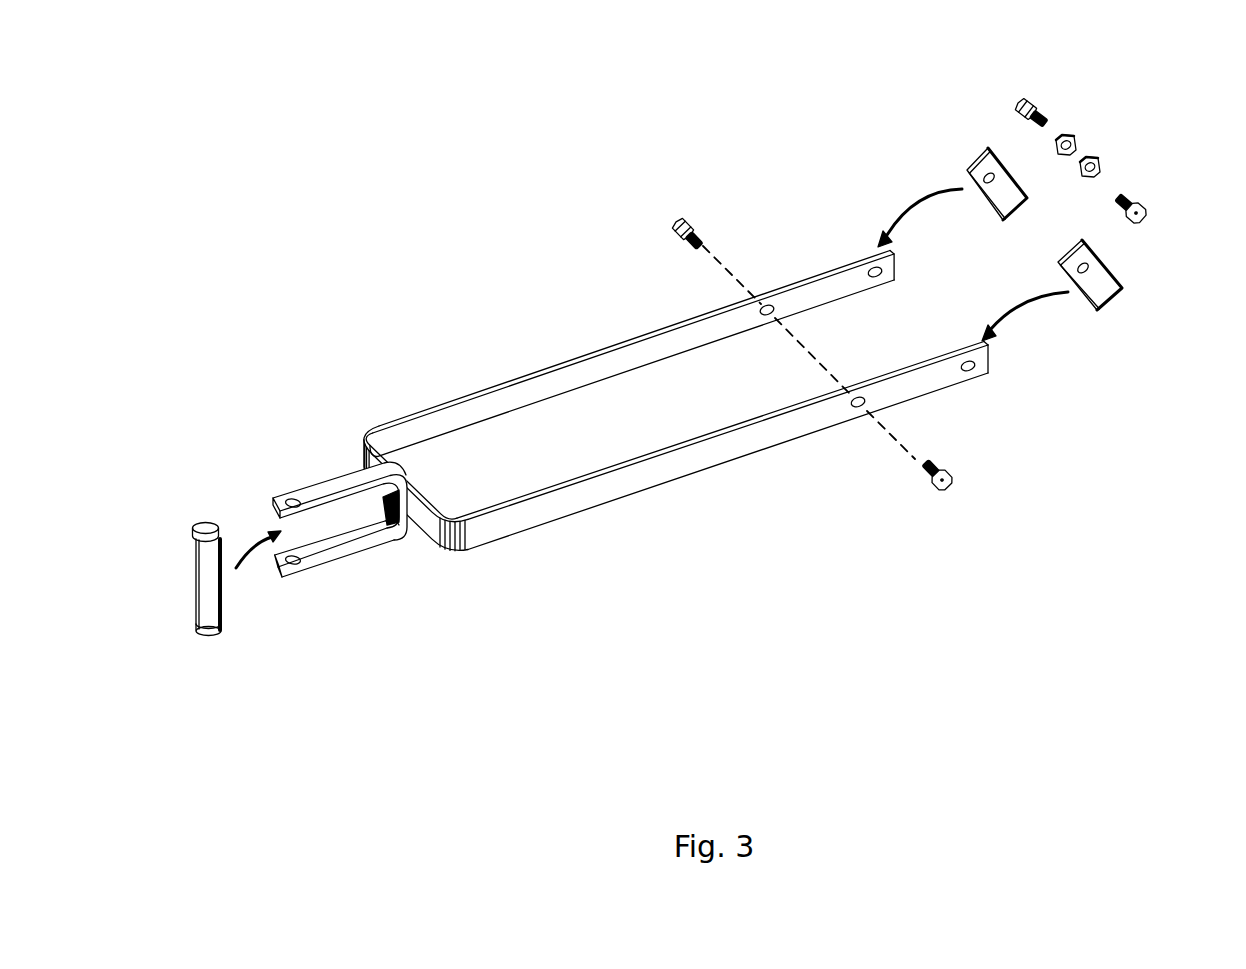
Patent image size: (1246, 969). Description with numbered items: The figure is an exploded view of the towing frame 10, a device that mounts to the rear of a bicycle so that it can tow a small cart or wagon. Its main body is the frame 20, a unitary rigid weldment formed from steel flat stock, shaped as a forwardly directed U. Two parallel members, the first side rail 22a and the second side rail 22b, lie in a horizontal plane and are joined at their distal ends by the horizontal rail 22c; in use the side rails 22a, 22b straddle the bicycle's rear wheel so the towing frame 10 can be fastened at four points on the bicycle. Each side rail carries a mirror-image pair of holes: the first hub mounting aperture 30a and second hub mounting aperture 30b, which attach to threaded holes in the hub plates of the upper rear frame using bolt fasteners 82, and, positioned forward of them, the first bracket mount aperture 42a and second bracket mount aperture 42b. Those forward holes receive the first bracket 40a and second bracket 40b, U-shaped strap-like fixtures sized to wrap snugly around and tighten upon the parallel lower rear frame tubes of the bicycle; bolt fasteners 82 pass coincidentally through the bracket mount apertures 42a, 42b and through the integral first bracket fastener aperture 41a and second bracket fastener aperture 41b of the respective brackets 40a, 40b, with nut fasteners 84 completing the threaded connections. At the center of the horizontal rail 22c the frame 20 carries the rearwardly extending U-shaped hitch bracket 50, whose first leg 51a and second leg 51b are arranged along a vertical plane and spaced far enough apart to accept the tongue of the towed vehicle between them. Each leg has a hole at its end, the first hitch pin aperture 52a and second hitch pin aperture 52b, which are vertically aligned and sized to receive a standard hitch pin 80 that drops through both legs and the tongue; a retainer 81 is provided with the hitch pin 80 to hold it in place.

The towing frame 10 is at (343, 244).
The frame 20 is at (420, 414).
The first side rail 22a is at (769, 497).
The second side rail 22b is at (632, 305).
The horizontal rail 22c is at (430, 497).
The first hub mounting aperture 30a is at (855, 412).
The second hub mounting aperture 30b is at (758, 307).
The first bracket 40a is at (1077, 355).
The second bracket 40b is at (939, 164).
The first bracket fastener aperture 41a is at (973, 165).
The second bracket fastener aperture 41b is at (1069, 265).
The first bracket mount aperture 42a is at (973, 374).
The second bracket mount aperture 42b is at (869, 268).
The hitch bracket 50 is at (316, 494).
The first leg 51a is at (298, 425).
The second leg 51b is at (359, 597).
The first hitch pin aperture 52a is at (288, 500).
The second hitch pin aperture 52b is at (294, 572).
The hitch pin 80 is at (249, 629).
The retainer 81 is at (202, 588).
The bolt fastener 82 is at (1018, 102).
The nut fastener 84 is at (1097, 160).